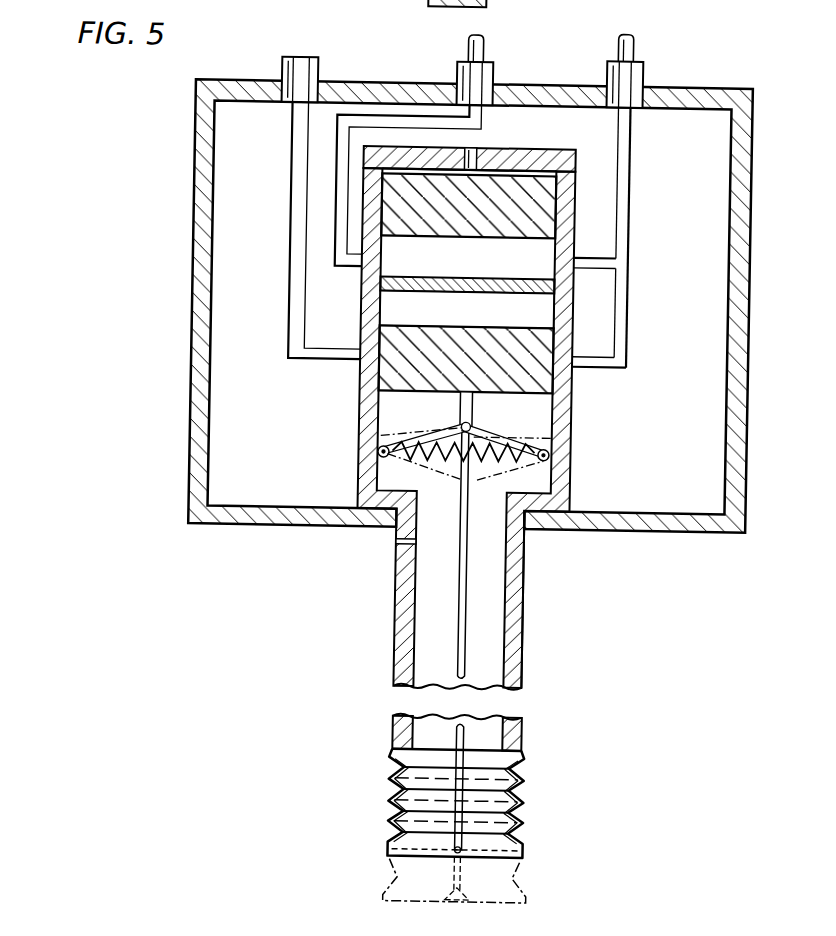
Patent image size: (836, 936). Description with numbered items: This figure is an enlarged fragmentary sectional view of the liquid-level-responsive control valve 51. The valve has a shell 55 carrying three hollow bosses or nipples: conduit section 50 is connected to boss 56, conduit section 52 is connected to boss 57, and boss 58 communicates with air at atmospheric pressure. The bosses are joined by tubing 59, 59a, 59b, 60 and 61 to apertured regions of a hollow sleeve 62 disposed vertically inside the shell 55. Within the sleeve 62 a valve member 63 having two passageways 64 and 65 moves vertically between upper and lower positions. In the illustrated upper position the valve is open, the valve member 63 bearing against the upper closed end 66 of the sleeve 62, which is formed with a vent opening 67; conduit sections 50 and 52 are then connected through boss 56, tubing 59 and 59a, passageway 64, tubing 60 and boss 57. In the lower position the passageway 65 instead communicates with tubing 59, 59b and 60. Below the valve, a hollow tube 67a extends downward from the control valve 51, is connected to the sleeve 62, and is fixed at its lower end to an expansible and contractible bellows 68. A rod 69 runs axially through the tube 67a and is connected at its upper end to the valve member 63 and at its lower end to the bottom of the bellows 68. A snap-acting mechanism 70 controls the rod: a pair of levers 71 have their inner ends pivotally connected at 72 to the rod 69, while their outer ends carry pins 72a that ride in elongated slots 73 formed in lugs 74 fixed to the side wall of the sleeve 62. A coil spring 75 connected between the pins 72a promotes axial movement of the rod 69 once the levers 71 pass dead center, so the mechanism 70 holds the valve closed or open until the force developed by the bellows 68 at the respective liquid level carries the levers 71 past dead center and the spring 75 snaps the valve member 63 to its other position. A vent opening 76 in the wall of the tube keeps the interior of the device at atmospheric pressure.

The conduit section 50 is at (627, 35).
The control valve 51 is at (165, 216).
The conduit section 52 is at (476, 42).
The shell 55 is at (745, 210).
The boss 56 is at (636, 72).
The boss 57 is at (486, 75).
The boss 58 is at (311, 74).
The tubing 59 is at (624, 189).
The tubing 59a is at (588, 255).
The tubing 59b is at (618, 332).
The tubing 60 is at (339, 149).
The tubing 61 is at (289, 293).
The hollow sleeve 62 is at (567, 148).
The valve member 63 is at (533, 212).
The passageway 64 is at (399, 271).
The passageway 65 is at (385, 315).
The upper closed end 66 is at (457, 401).
The vent opening 67 is at (469, 152).
The hollow tube 67a is at (520, 639).
The bellows 68 is at (523, 827).
The rod 69 is at (469, 592).
The snap-acting mechanism 70 is at (465, 622).
The levers 71 is at (437, 465).
The pivot 72 is at (460, 425).
The pins 72a is at (378, 453).
The elongated slots 73 is at (384, 459).
The lugs 74 is at (549, 454).
The coil spring 75 is at (495, 473).
The vent opening 76 is at (401, 544).